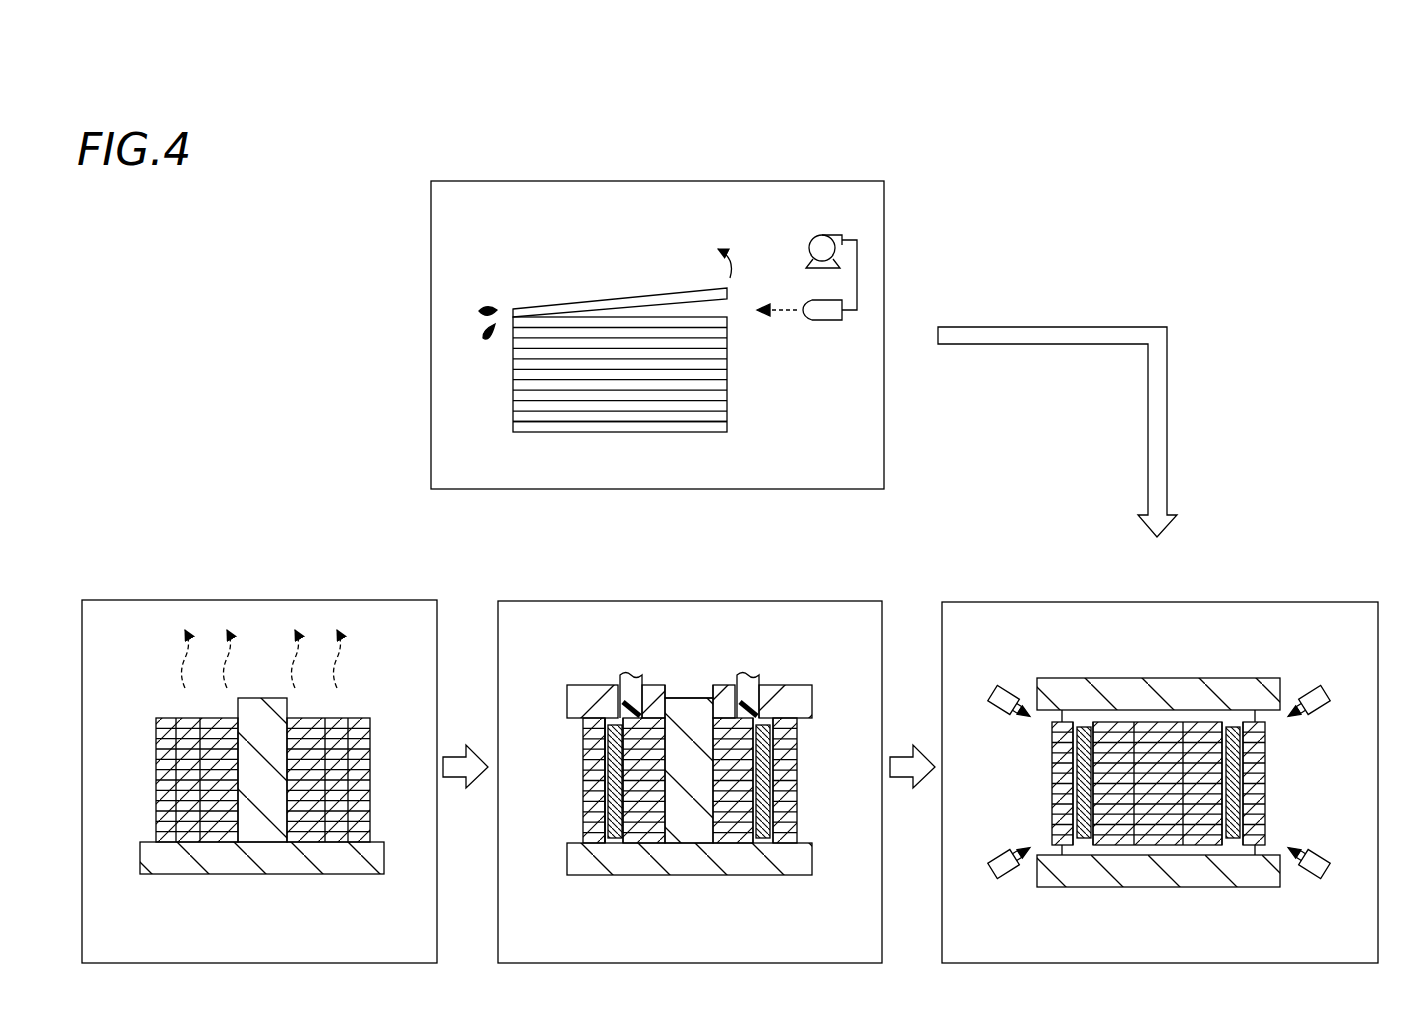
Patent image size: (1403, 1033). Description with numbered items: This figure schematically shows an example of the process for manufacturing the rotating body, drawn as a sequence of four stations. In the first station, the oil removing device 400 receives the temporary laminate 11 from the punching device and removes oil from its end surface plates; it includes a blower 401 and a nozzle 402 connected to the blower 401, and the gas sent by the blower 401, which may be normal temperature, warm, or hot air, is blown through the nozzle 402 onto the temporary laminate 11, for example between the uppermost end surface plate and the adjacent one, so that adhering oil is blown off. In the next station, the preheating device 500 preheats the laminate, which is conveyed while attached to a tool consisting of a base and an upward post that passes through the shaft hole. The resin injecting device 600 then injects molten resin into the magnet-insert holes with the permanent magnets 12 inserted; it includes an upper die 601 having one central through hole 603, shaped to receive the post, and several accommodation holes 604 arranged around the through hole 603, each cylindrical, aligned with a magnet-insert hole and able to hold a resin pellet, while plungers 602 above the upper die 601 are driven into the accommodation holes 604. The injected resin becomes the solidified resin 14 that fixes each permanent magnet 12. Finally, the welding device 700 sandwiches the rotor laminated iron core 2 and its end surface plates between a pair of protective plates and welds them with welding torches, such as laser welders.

The rotor laminated iron core 2 is at (1114, 793).
The temporary laminate 11 is at (503, 262).
The permanent magnet 12 is at (613, 832).
The solidified resin 14 is at (608, 790).
The oil removing device 400 is at (832, 181).
The blower 401 is at (813, 236).
The nozzle 402 is at (807, 322).
The preheating device 500 is at (400, 581).
The resin injecting device 600 is at (852, 581).
The upper die 601 is at (800, 690).
The plunger 602 is at (628, 680).
The through hole 603 is at (668, 698).
The accommodation hole 604 is at (752, 705).
The welding device 700 is at (1318, 599).